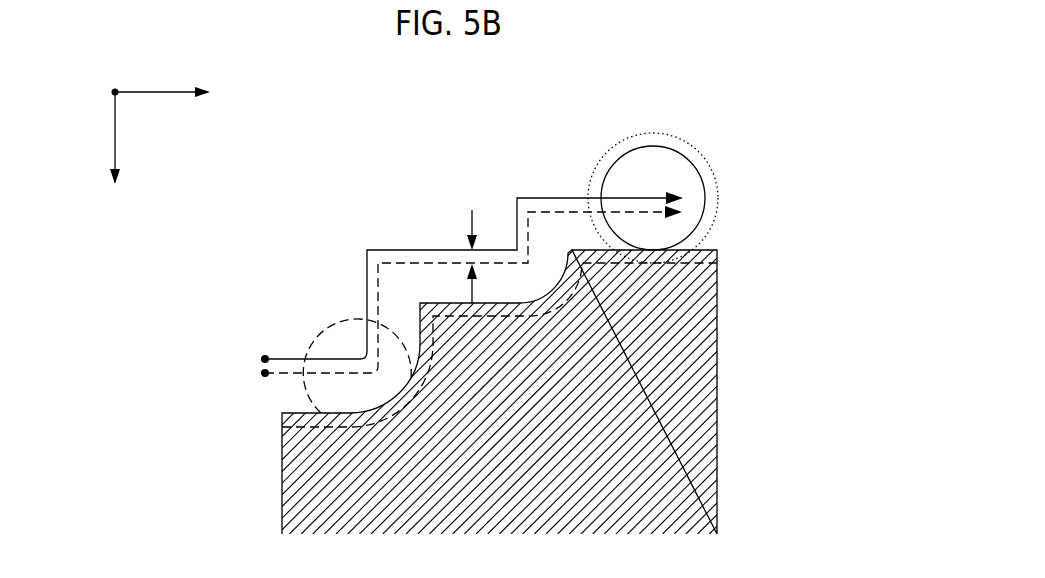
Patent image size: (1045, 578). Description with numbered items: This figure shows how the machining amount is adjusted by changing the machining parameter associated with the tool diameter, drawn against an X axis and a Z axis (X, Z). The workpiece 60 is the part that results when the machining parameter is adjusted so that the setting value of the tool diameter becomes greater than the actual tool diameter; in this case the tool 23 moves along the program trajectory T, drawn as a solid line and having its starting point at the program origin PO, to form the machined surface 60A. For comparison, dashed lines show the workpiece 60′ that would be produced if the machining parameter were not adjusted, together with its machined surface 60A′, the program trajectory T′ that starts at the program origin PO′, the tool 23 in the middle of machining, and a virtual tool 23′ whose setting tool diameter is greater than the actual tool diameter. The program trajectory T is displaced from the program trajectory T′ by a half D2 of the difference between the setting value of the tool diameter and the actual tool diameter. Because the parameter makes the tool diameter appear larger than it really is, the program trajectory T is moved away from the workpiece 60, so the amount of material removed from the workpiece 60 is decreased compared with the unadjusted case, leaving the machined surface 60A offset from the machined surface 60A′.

The tool 23 is at (707, 192).
The virtual tool 23′ is at (667, 132).
The workpiece 60 is at (735, 317).
The workpiece 60′ is at (735, 268).
The machined surface 60A is at (564, 268).
The machined surface 60A′ is at (437, 300).
The program trajectory T is at (551, 197).
The program trajectory T′ is at (405, 262).
The program origin PO is at (265, 355).
The program origin PO′ is at (261, 373).
The half of the difference between the setting value of the tool diameter and the ac D2 is at (470, 258).
The X axis X is at (161, 79).
The Z axis Z is at (103, 138).